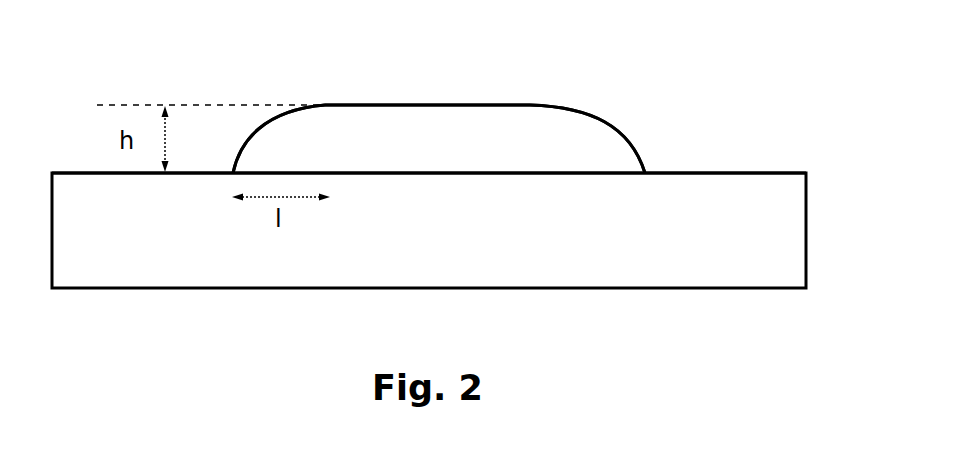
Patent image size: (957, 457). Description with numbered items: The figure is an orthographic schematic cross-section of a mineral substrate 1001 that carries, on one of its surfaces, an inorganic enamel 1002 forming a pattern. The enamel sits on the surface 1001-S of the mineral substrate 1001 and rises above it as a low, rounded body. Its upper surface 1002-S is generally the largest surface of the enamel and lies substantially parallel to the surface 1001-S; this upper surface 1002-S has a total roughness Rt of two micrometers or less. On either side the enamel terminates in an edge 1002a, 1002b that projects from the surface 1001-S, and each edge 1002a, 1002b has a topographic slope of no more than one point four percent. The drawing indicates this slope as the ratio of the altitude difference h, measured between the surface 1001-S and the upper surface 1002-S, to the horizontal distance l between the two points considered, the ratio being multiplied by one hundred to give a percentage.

The mineral substrate 1001 is at (713, 265).
The surface of the mineral substrate 1001-S is at (786, 160).
The inorganic enamel 1002 is at (424, 101).
The upper surface of the inorganic enamel 1002-S is at (525, 98).
The edge of the inorganic enamel 1002a is at (630, 120).
The edge of the inorganic enamel 1002b is at (252, 118).